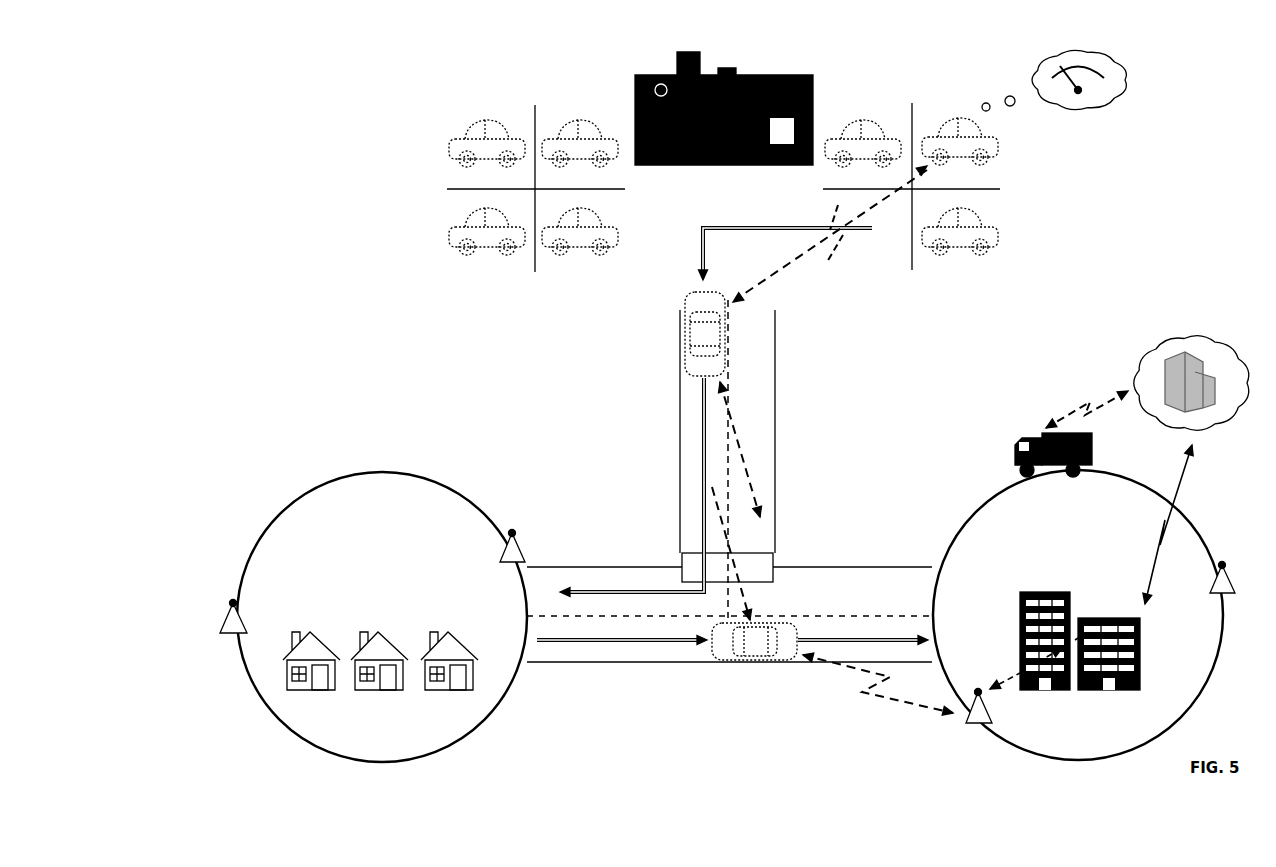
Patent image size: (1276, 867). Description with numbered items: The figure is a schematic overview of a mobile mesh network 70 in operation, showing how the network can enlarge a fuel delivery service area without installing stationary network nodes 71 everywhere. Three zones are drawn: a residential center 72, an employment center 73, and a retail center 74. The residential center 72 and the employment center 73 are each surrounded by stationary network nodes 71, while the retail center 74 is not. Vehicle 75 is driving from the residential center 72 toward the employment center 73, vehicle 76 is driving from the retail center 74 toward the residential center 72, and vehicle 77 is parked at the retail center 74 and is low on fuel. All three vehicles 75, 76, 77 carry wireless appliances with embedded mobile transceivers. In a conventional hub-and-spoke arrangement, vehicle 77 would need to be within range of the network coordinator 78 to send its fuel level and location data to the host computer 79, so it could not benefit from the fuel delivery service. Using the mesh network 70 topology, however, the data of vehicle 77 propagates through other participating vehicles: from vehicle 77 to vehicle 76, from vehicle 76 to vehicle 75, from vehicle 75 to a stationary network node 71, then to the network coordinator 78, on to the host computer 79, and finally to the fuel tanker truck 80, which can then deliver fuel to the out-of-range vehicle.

The mesh network 70 is at (448, 360).
The stationary network node 71 is at (216, 619).
The residential center 72 is at (371, 606).
The employment center 73 is at (1033, 570).
The retail center 74 is at (630, 102).
The vehicle 75 is at (752, 670).
The vehicle 76 is at (677, 332).
The vehicle 77 is at (1007, 138).
The network coordinator 78 is at (1120, 614).
The host computer 79 is at (1154, 366).
The fuel tanker truck 80 is at (1002, 453).